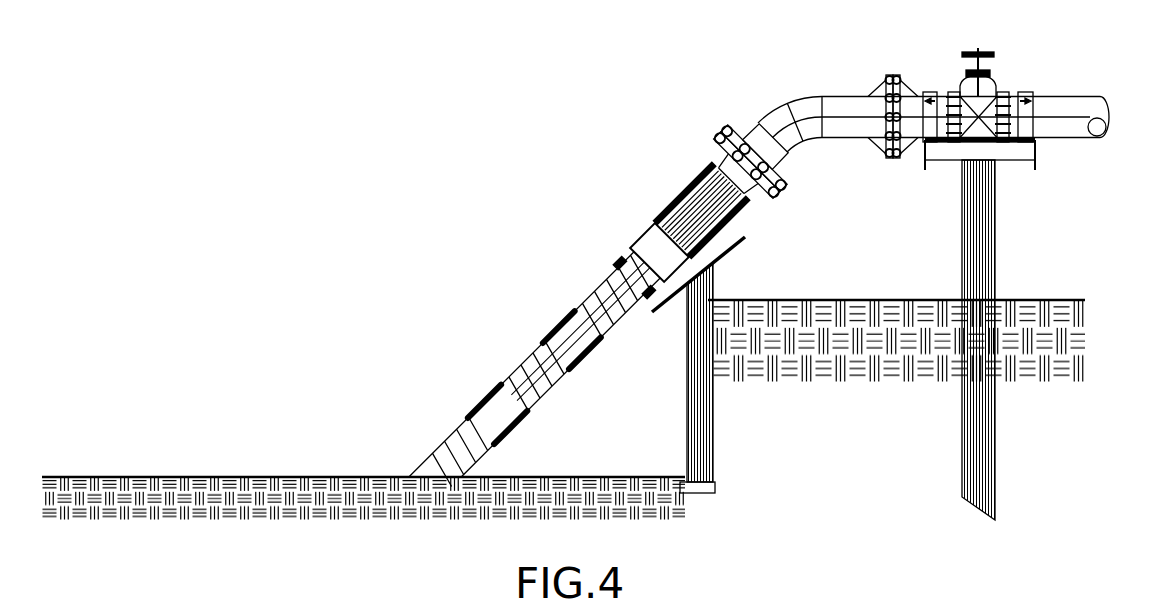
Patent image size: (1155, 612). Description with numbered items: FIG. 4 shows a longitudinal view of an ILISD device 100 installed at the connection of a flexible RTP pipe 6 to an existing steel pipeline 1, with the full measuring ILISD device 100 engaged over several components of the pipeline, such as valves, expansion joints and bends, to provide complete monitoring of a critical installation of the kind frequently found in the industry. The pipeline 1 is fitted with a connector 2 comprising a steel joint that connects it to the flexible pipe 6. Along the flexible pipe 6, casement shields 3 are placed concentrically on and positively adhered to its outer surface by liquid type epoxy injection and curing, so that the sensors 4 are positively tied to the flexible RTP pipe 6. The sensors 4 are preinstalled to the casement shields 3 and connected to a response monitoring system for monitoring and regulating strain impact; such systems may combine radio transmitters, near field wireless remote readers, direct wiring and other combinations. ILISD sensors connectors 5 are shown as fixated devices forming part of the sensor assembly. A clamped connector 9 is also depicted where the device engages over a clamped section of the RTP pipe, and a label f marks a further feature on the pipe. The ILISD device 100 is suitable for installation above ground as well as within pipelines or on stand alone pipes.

The steel pipeline 1 is at (1068, 95).
The connector 2 is at (702, 182).
The casement shields 3 is at (497, 407).
The sensors 4 is at (502, 411).
The ILISD sensors connectors 5 is at (573, 337).
The flexible RTP pipe 6 is at (433, 452).
The clamp 9 is at (620, 264).
The ILISD device 100 is at (434, 276).
The flange coupling f is at (557, 327).